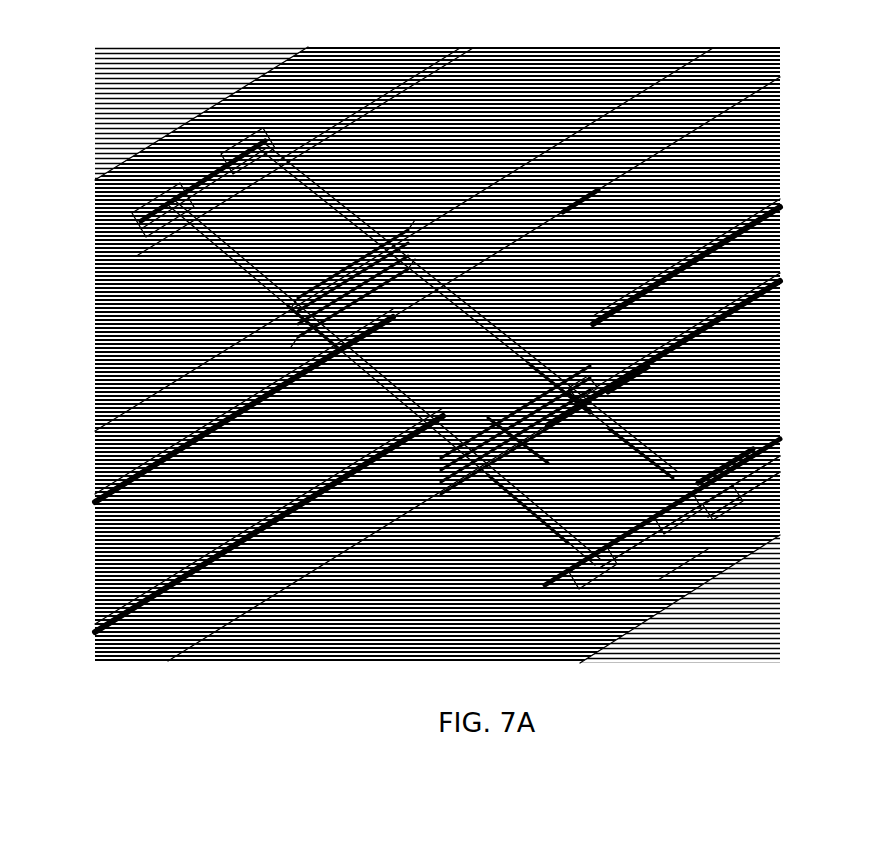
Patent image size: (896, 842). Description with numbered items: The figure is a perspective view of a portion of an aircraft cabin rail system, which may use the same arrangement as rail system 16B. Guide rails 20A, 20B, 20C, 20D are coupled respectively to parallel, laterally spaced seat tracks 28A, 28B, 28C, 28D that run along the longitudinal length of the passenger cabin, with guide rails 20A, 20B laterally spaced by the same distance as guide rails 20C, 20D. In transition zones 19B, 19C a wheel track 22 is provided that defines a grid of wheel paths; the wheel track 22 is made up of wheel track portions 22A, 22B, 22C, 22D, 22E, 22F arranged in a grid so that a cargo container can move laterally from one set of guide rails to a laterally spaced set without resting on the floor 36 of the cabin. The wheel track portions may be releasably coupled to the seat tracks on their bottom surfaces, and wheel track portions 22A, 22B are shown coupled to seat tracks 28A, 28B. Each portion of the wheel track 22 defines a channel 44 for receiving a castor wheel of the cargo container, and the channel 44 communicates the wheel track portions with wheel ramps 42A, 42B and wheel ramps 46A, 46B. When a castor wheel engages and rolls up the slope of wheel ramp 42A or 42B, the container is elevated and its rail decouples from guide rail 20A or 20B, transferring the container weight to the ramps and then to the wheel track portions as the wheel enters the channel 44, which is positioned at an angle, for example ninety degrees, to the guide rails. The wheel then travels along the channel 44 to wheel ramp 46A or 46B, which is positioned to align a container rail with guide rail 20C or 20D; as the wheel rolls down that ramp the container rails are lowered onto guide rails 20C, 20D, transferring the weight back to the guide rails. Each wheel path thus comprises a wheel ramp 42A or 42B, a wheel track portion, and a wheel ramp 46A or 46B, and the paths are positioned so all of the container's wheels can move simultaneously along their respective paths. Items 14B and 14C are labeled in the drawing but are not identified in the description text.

The wheel track 22 is at (190, 140).
The wheel ramp 46A is at (300, 333).
The seat track 28C is at (550, 220).
The seat track 28D is at (545, 333).
The guide rail 20A is at (765, 268).
The floor 36 is at (137, 352).
The guide rail 20C is at (223, 395).
The wheel track portion 22F is at (366, 295).
The wheel track portion 22E is at (517, 363).
The wheel ramp 42A is at (577, 370).
The seat track 28A is at (640, 390).
The wheel ramp 46B is at (437, 432).
The guide rail 20D is at (360, 450).
The wheel track portion 22A is at (612, 427).
The guide rail 20B is at (777, 408).
The seat track 28B is at (697, 470).
The wheel track portion 22D is at (515, 424).
The transition zone 19C is at (403, 452).
The wheel track portion 22C is at (637, 523).
The trace 14B is at (767, 448).
The wheel track portion 22B is at (527, 517).
The transition zone 19B is at (745, 492).
The trace 14C is at (338, 532).
The channel 44 is at (573, 560).
The wheel ramp 42B is at (713, 500).
The rail system 16B is at (693, 559).